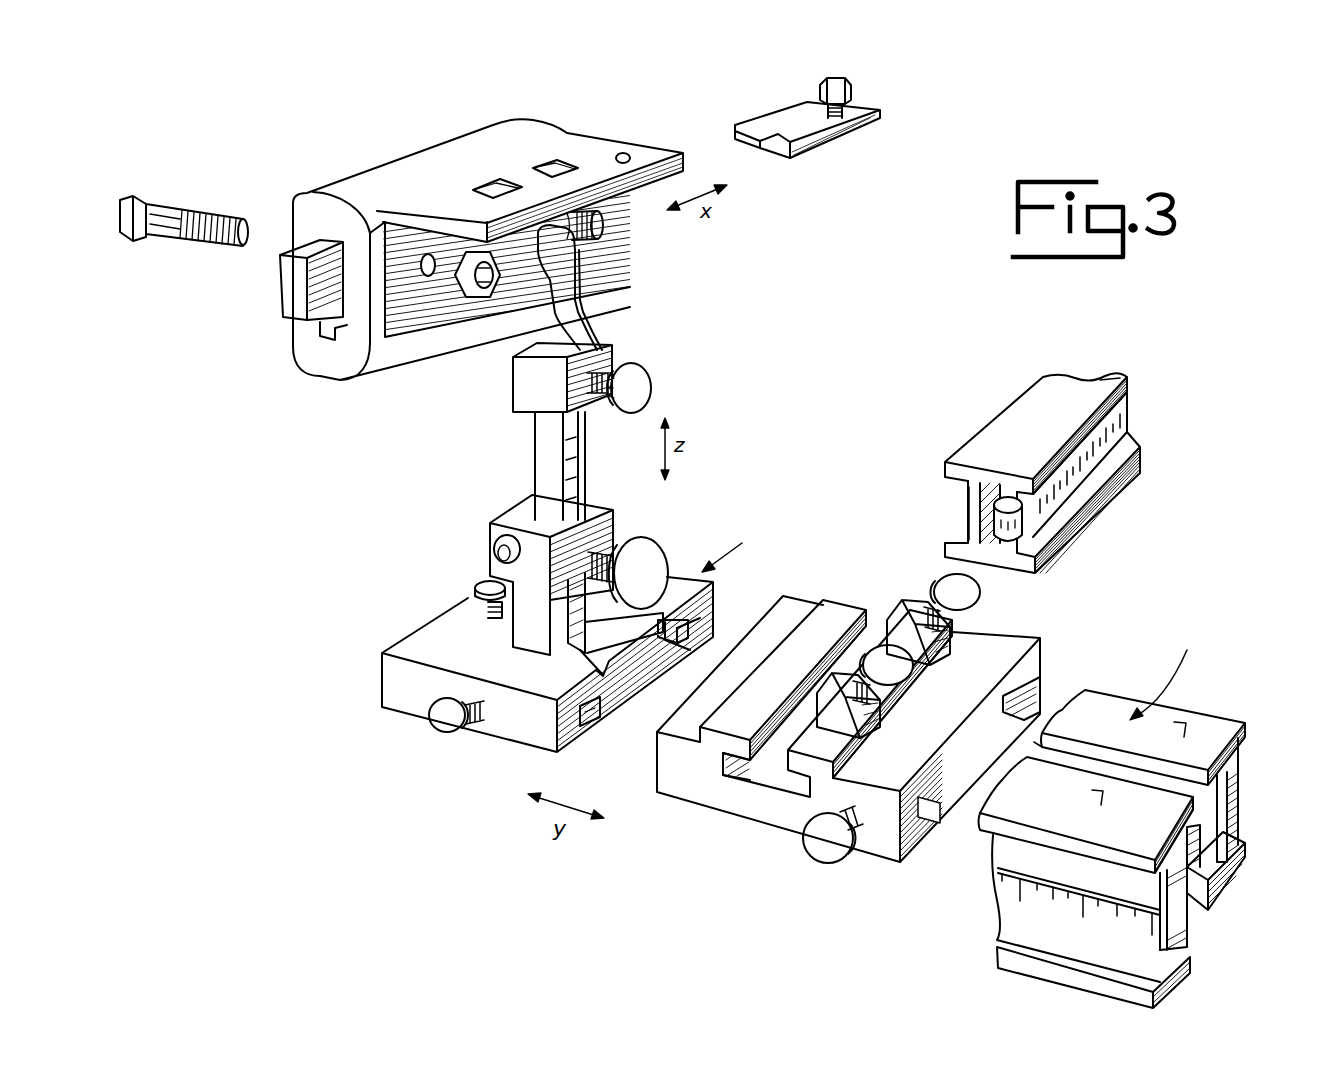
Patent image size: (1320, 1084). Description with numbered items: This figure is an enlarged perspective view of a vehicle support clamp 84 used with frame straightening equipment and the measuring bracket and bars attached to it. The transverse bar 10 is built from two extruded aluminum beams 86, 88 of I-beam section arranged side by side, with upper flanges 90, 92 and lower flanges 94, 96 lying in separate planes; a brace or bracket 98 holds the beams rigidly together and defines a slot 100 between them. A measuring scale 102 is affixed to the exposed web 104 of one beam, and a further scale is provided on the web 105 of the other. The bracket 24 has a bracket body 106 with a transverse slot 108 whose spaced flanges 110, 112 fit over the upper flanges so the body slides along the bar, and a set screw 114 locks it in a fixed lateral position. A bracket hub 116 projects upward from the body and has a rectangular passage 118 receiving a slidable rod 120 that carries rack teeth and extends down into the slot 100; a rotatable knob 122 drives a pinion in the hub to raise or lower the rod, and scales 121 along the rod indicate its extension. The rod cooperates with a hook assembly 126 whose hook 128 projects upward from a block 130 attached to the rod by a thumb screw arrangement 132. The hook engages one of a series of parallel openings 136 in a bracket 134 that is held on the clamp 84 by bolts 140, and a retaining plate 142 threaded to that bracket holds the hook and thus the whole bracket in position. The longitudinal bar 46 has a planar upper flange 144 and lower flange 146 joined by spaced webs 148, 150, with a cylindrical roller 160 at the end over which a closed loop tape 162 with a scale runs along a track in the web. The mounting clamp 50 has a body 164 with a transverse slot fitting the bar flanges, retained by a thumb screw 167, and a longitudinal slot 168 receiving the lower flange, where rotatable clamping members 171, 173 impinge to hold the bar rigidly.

The transverse bar 10 is at (1174, 677).
The bracket 24 is at (735, 547).
The bar 46 is at (1015, 411).
The mounting bracket or clamp 50 is at (690, 792).
The vehicle support clamp 84 is at (295, 345).
The beam 86 is at (1215, 728).
The beam 88 is at (1027, 813).
The upper flange 90 is at (1084, 799).
The upper flange 92 is at (1168, 728).
The lower flange 94 is at (1010, 955).
The lower flange 96 is at (1247, 847).
The bracket 98 is at (1200, 843).
The slot 100 is at (1035, 747).
The measuring scale 102 is at (1005, 893).
The web 104 is at (1007, 857).
The web 105 is at (1240, 768).
The bracket body 106 is at (417, 640).
The transverse slot 108 is at (700, 615).
The flange 110 is at (598, 714).
The flange 112 is at (690, 657).
The set screw 114 is at (447, 723).
The bracket hub 116 is at (493, 546).
The passage 118 is at (532, 523).
The slidable rod 120 is at (586, 474).
The scales 121 is at (573, 457).
The rotatable knob 122 is at (664, 554).
The hook assembly 126 is at (598, 322).
The hook 128 is at (600, 250).
The block 130 is at (606, 356).
The thumb screw arrangement 132 is at (646, 383).
The bracket 134 is at (604, 146).
The openings 136 is at (547, 170).
The bolts 140 is at (217, 211).
The retaining plate 142 is at (810, 146).
The upper flange 144 is at (1117, 380).
The lower flange 146 is at (1135, 468).
The web 148 is at (968, 501).
The web 150 is at (988, 488).
The cylindrical roller 160 is at (1020, 515).
The closed loop tape 162 is at (1117, 430).
The body 164 is at (795, 812).
The thumb screw 167 is at (824, 855).
The longitudinal slot 168 is at (765, 775).
The rotatable clamping member 171 is at (874, 648).
The rotatable clamping member 173 is at (980, 596).